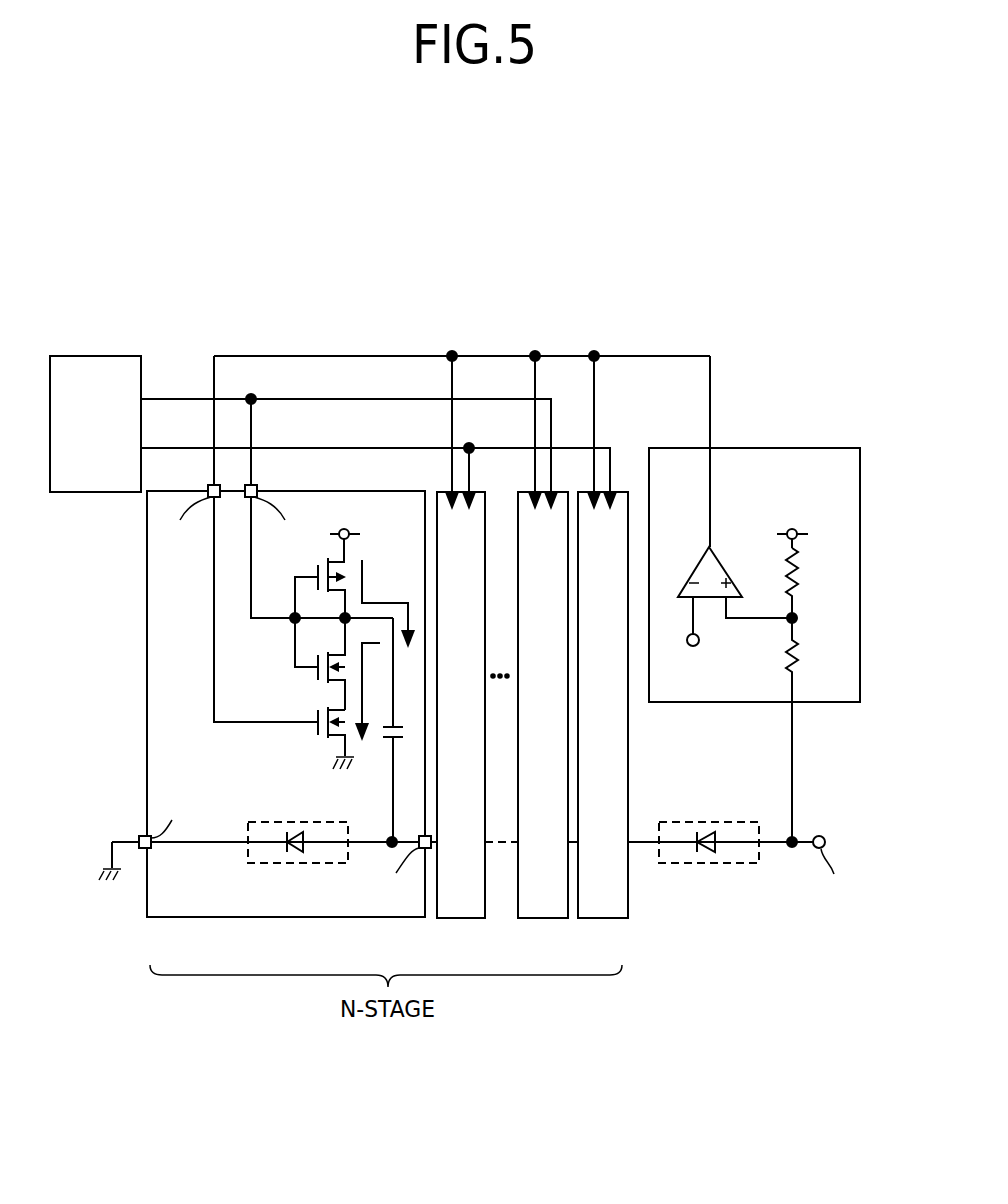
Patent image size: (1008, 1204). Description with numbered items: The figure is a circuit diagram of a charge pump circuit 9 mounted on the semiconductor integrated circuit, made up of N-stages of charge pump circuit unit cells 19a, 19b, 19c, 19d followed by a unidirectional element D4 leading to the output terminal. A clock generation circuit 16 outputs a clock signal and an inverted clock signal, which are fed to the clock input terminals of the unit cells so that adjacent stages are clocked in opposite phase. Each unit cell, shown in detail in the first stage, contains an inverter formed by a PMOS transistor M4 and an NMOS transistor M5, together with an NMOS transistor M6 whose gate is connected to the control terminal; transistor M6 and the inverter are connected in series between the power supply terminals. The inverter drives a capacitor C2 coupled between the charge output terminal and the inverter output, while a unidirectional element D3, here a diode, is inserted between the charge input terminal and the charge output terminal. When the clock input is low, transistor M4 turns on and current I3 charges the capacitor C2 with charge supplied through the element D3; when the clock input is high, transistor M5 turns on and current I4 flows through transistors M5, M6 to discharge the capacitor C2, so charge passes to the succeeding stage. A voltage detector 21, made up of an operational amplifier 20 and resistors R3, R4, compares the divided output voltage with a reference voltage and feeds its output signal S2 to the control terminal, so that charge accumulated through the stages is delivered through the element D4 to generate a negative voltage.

The clock generation circuit 16 is at (99, 356).
The charge pump circuit 9 is at (306, 318).
The output signal S2 is at (669, 356).
The charge pump circuit unit cell 19a is at (285, 725).
The charge pump circuit unit cell 19b is at (460, 918).
The charge pump circuit unit cell 19c is at (542, 918).
The charge pump circuit unit cell 19d is at (602, 918).
The PMOS transistor M4 is at (320, 579).
The NMOS transistor M5 is at (320, 664).
The NMOS transistor M6 is at (329, 738).
The current I3 is at (388, 604).
The current I4 is at (370, 691).
The capacitor C2 is at (401, 730).
The unidirectional element D3 is at (298, 827).
The unidirectional element D4 is at (709, 827).
The voltage detector 21 is at (754, 619).
The operational amplifier 20 is at (703, 556).
The resistor R3 is at (809, 583).
The resistor R4 is at (809, 730).